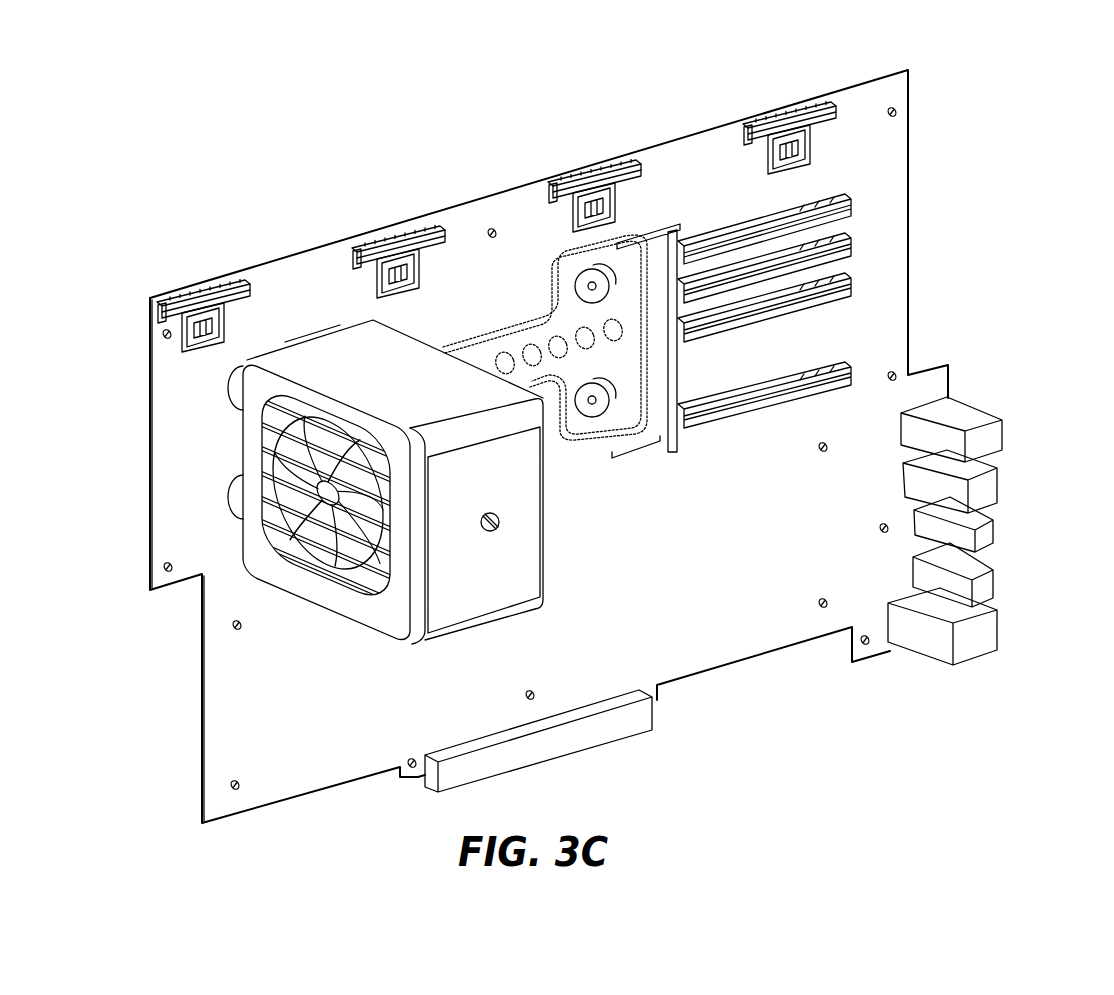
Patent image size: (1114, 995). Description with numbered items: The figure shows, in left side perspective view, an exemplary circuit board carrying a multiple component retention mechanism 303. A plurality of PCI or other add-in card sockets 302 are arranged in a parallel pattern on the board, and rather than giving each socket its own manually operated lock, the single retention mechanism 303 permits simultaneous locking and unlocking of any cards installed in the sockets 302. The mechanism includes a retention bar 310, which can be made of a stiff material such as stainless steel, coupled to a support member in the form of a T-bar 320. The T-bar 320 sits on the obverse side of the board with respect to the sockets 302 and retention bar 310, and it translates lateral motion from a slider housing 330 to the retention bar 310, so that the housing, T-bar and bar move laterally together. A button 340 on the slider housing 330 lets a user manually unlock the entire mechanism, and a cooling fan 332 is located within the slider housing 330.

The component retention mechanism 303 is at (950, 90).
The add-in card sockets 302 is at (845, 368).
The retention bar 310 is at (676, 452).
The T-bar 320 is at (577, 425).
The slider housing 330 is at (372, 358).
The cooling fan 332 is at (327, 525).
The button 340 is at (500, 525).